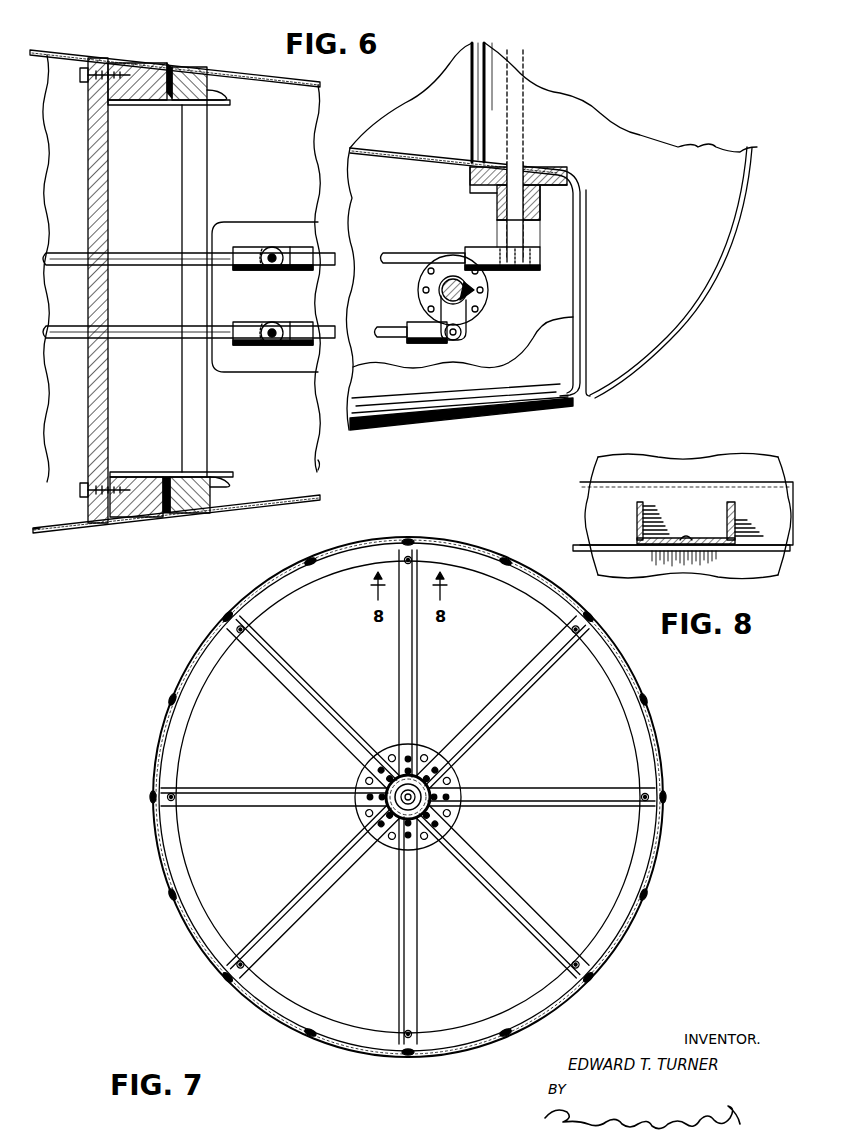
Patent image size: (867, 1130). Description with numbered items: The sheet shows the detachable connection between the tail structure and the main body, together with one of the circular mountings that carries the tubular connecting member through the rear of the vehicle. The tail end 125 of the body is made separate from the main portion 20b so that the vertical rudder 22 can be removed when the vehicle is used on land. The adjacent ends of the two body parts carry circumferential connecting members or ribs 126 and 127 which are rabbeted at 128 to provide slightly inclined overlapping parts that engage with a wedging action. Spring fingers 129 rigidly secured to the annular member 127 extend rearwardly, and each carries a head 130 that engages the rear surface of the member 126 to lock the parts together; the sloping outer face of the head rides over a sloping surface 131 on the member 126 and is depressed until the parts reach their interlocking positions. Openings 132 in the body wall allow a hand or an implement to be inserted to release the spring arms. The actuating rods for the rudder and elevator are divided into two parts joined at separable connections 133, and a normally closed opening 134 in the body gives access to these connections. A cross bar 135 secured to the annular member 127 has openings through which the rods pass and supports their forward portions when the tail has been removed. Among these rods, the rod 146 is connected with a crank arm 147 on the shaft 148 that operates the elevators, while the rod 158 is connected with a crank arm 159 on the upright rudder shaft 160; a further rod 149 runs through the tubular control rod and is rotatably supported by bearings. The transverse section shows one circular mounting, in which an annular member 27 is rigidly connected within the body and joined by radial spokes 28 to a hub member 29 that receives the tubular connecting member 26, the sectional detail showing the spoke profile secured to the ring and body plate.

In FIG. 6, the main portion of the body 20b is at (55, 528).
In FIG. 8, the main portion of the body 20b is at (748, 462).
In FIG. 7, the main portion of the body 20b is at (655, 723).
In FIG. 6, the vertical rudder 22 is at (626, 398).
In FIG. 7, the connecting member 26 is at (418, 770).
In FIG. 8, the annular member 27 is at (776, 525).
In FIG. 7, the annular member 27 is at (655, 776).
In FIG. 8, the radial spokes 28 is at (726, 519).
In FIG. 7, the radial spokes 28 is at (546, 794).
In FIG. 7, the hub member 29 is at (423, 848).
In FIG. 6, the tail end of the body 125 is at (318, 465).
In FIG. 6, the circumferential connecting member 126 is at (212, 496).
In FIG. 6, the circumferential connecting member 127 is at (139, 477).
In FIG. 6, the rabbet 128 is at (172, 514).
In FIG. 6, the spring fingers 129 is at (142, 105).
In FIG. 6, the head 130 is at (228, 98).
In FIG. 6, the sloping surface 131 is at (168, 63).
In FIG. 6, the openings 132 is at (226, 69).
In FIG. 6, the rod connections 133 is at (272, 322).
In FIG. 6, the normally closed opening 134 is at (212, 370).
In FIG. 6, the cross bar 135 is at (106, 416).
In FIG. 7, the cross bar 135 is at (450, 783).
In FIG. 6, the rod 146 is at (146, 340).
In FIG. 6, the crank arm 147 is at (470, 315).
In FIG. 6, the shaft 148 is at (486, 292).
In FIG. 7, the rod 149 is at (458, 815).
In FIG. 6, the rod 158 is at (138, 265).
In FIG. 6, the crank arm 159 is at (528, 270).
In FIG. 6, the upright rudder shaft 160 is at (515, 200).